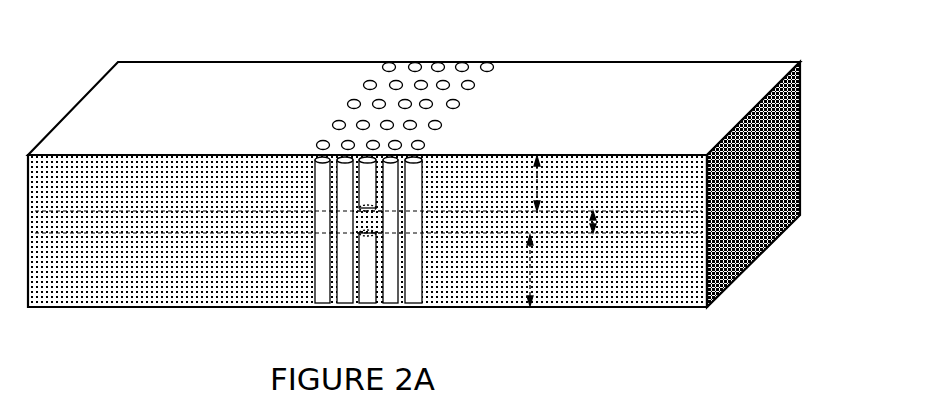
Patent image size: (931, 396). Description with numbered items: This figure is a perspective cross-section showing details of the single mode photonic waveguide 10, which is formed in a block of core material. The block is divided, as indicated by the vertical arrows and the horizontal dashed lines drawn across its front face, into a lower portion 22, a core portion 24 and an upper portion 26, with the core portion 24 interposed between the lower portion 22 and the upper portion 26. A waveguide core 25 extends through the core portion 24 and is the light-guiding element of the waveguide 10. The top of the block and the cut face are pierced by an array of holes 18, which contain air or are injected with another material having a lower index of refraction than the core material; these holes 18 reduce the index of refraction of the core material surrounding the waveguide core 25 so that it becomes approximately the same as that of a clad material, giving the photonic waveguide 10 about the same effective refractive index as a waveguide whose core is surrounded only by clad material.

The photonic waveguide 10 is at (299, 88).
The holes 18 is at (417, 88).
The lower portion 22 is at (533, 247).
The core portion 24 is at (597, 216).
The waveguide core 25 is at (357, 222).
The upper portion 26 is at (539, 190).